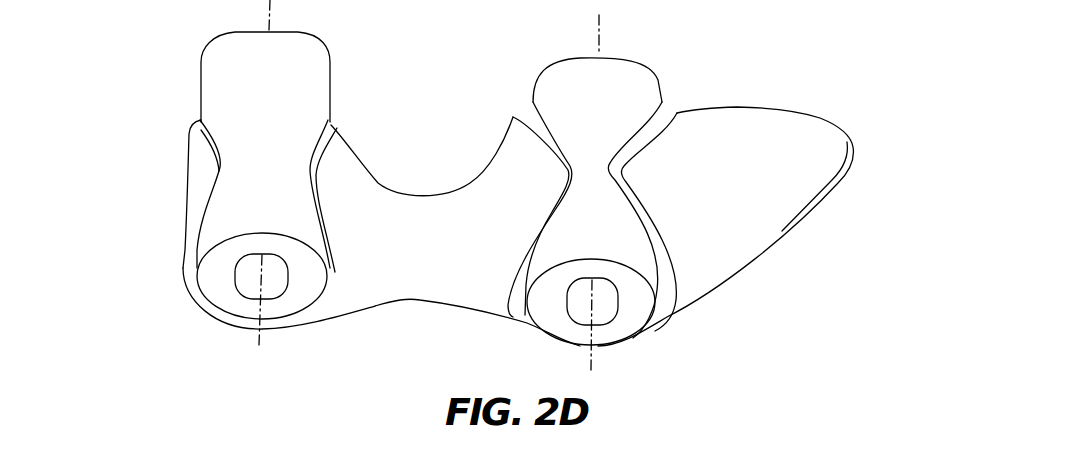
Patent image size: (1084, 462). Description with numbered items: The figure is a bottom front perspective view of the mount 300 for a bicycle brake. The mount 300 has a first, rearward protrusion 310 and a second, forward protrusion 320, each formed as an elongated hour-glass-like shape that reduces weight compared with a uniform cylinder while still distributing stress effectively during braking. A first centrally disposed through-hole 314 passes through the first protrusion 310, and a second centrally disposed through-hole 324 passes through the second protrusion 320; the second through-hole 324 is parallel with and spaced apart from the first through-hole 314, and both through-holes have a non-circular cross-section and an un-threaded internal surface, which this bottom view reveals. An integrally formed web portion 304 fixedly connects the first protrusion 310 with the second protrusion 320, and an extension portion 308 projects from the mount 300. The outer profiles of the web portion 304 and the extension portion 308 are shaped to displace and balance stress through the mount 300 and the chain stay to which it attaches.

The mount 300 is at (505, 190).
The web portion 304 is at (428, 300).
The extension portion 308 is at (807, 213).
The first protrusion 310 is at (246, 177).
The first through-hole 314 is at (235, 295).
The second protrusion 320 is at (623, 198).
The second through-hole 324 is at (613, 320).